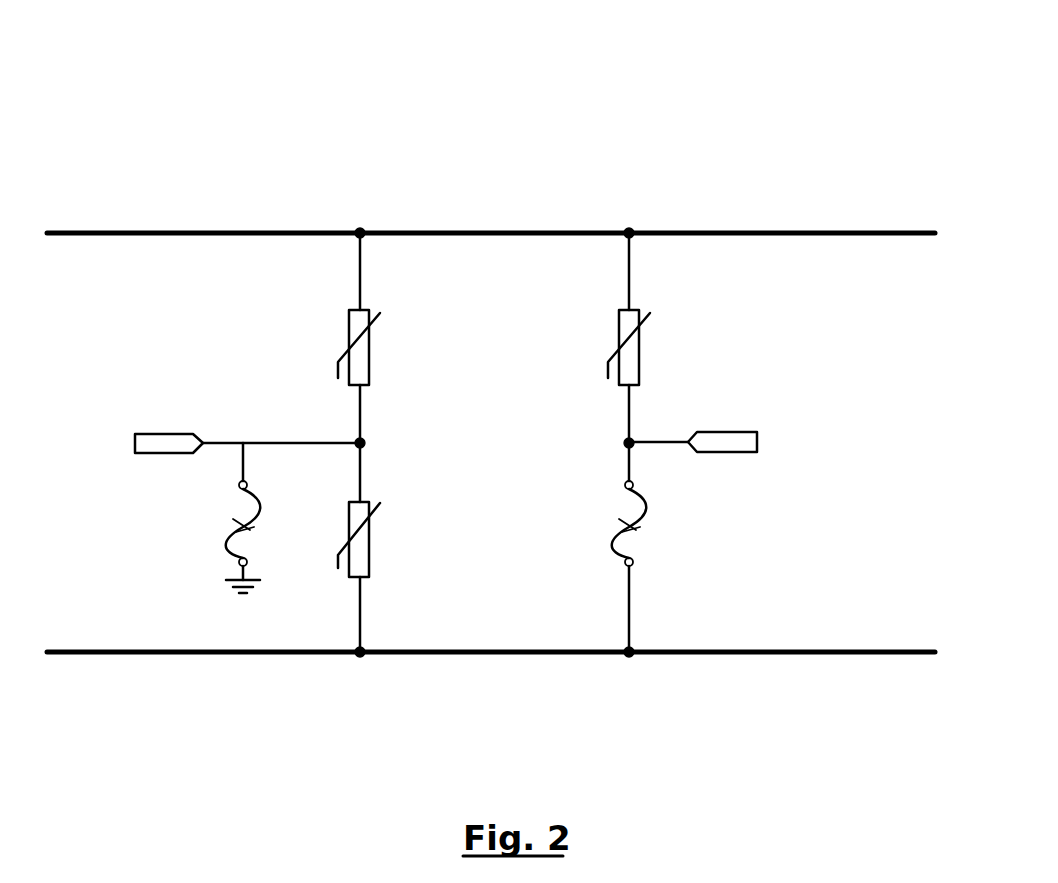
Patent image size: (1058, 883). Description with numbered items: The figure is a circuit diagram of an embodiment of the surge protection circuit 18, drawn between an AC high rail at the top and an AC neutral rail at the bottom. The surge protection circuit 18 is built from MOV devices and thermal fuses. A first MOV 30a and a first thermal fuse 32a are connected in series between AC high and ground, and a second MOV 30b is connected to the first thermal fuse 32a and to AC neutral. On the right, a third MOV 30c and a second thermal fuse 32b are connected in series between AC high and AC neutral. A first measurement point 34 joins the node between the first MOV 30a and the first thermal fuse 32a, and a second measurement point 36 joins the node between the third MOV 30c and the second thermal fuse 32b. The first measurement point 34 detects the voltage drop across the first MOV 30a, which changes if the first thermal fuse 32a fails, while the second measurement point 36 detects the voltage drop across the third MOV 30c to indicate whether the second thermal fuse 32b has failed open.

The surge protection circuit 18 is at (327, 76).
The first MOV 30a is at (370, 352).
The second MOV 30b is at (370, 538).
The third MOV 30c is at (618, 318).
The first thermal fuse 32a is at (230, 540).
The second thermal fuse 32b is at (644, 503).
The first measurement point 34 is at (164, 433).
The second measurement point 36 is at (722, 432).